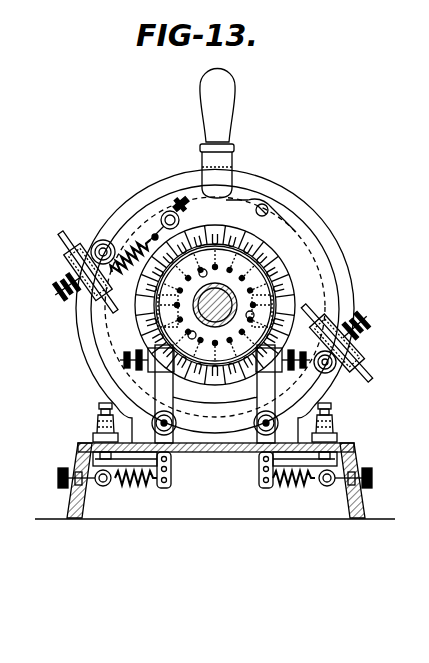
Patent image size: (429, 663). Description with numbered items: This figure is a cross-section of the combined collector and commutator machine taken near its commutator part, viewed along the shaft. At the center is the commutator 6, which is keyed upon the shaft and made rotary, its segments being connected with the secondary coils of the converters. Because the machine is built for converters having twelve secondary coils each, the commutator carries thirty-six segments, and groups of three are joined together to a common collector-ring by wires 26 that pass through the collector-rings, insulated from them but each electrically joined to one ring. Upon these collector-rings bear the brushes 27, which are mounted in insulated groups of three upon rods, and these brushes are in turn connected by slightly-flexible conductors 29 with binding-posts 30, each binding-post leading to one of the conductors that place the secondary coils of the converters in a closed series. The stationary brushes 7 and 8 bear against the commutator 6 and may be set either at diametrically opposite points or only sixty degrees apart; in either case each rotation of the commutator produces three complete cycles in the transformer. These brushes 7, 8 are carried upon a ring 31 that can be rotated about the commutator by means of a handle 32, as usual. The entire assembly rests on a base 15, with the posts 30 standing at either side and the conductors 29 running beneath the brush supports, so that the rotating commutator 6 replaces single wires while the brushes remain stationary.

The commutator 6 is at (215, 306).
The brush 7 is at (132, 303).
The brush 8 is at (302, 308).
The base 15 is at (74, 498).
The wires 26 is at (217, 243).
The brushes 27 is at (157, 298).
The slightly-flexible conductors 29 is at (122, 470).
The binding-posts 30 is at (97, 429).
The ring 31 is at (292, 215).
The handle 32 is at (228, 104).